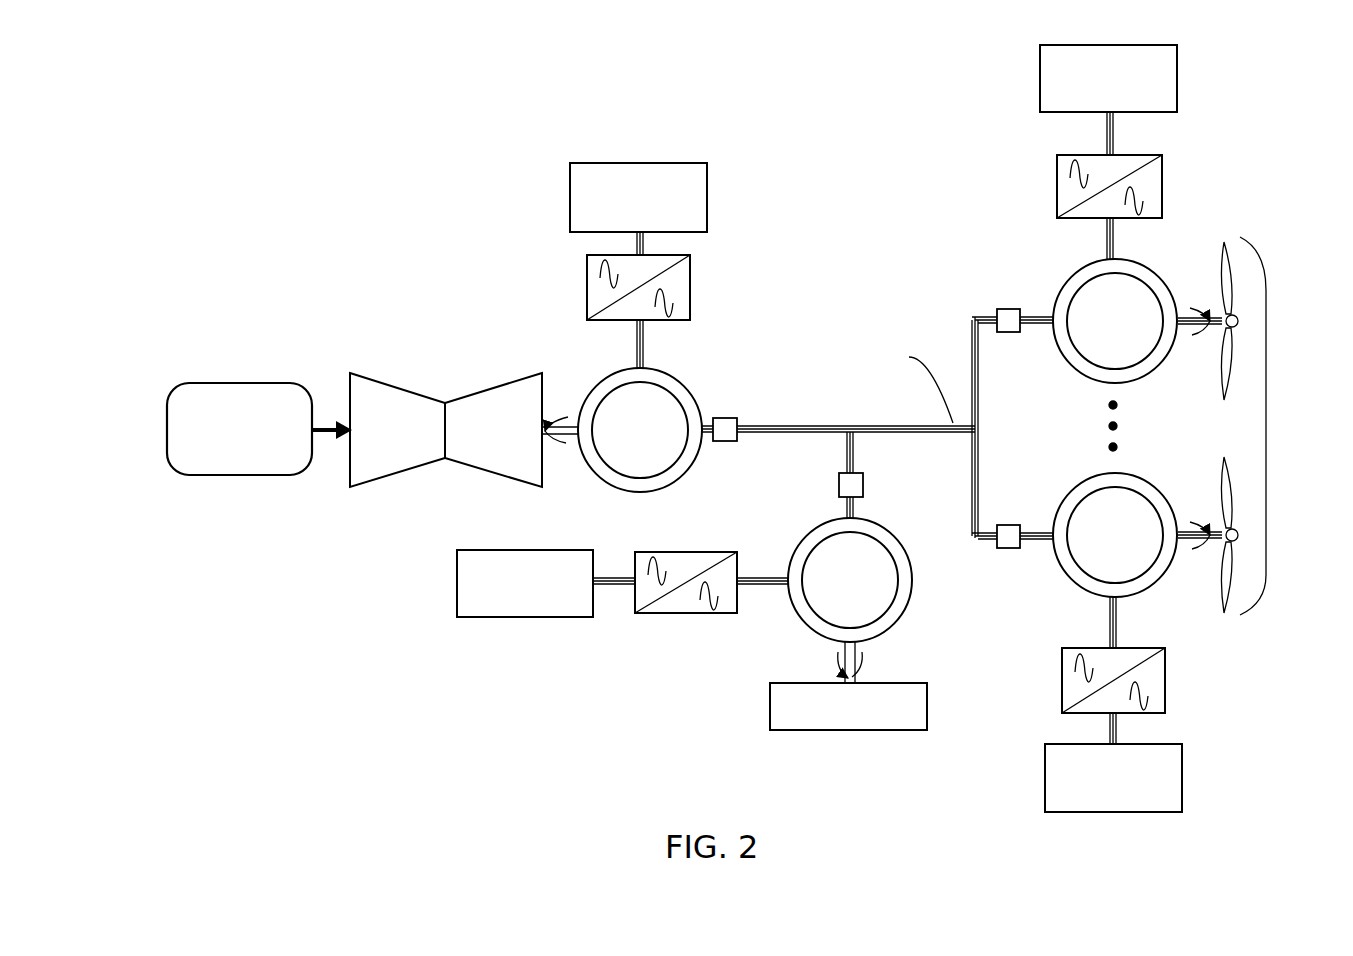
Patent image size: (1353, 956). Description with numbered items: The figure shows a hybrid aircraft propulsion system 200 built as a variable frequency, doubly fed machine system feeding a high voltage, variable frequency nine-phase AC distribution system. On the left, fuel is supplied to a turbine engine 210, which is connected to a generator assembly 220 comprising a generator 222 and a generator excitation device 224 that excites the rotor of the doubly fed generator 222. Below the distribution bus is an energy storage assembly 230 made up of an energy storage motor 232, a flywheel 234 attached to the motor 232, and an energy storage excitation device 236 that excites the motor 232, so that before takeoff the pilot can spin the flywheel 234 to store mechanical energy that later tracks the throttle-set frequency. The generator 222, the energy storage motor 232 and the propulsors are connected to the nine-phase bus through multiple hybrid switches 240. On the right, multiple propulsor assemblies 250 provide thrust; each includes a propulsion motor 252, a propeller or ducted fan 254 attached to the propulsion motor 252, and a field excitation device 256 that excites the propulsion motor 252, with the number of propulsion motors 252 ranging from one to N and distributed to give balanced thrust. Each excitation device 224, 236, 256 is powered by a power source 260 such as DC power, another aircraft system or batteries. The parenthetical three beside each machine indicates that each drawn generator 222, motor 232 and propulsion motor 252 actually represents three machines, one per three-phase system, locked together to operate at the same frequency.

The propulsion system 200 is at (335, 200).
The turbine engine 210 is at (445, 403).
The generator assembly 220 is at (548, 292).
The generator 222 is at (586, 380).
The generator excitation device 224 is at (690, 290).
The energy storage assembly 230 is at (757, 690).
The energy storage motor 232 is at (800, 630).
The flywheel 234 is at (820, 732).
The energy storage excitation device 236 is at (665, 615).
The hybrid switch 240 is at (735, 418).
The propulsor assembly 250 is at (1266, 428).
The propulsion motor 252 is at (1063, 360).
The propeller or ducted fan 254 is at (1220, 265).
The field excitation device 256 is at (1057, 180).
The power source 260 is at (586, 163).